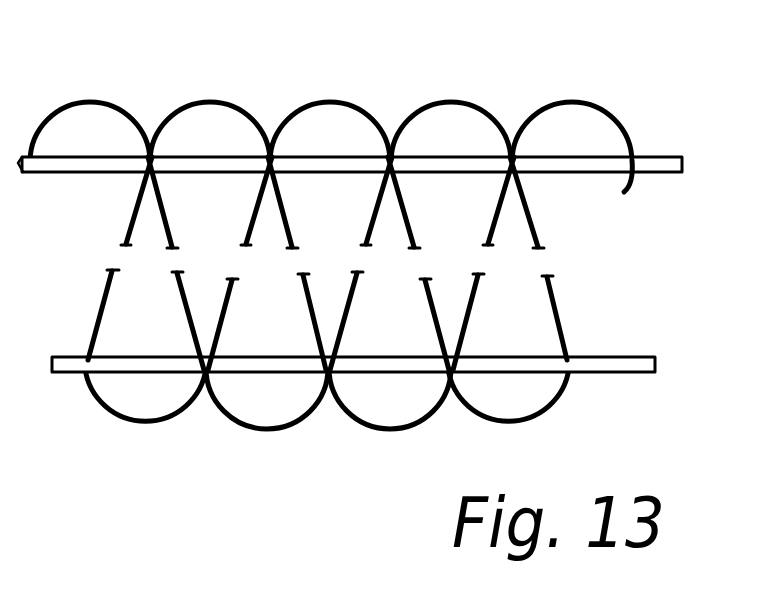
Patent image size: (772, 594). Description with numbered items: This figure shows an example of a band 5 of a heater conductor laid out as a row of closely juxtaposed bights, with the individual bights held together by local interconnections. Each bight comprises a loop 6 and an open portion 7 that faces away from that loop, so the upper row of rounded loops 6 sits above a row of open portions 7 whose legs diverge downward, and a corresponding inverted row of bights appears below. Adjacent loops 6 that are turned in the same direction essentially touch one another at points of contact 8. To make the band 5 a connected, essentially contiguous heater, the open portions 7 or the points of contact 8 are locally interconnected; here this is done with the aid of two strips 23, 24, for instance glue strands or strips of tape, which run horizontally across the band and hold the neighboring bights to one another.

The band 5 is at (632, 262).
The loop 6 is at (465, 412).
The open portion 7 is at (390, 200).
The points of contact 8 is at (262, 155).
The strip 23 is at (682, 168).
The strip 24 is at (655, 362).